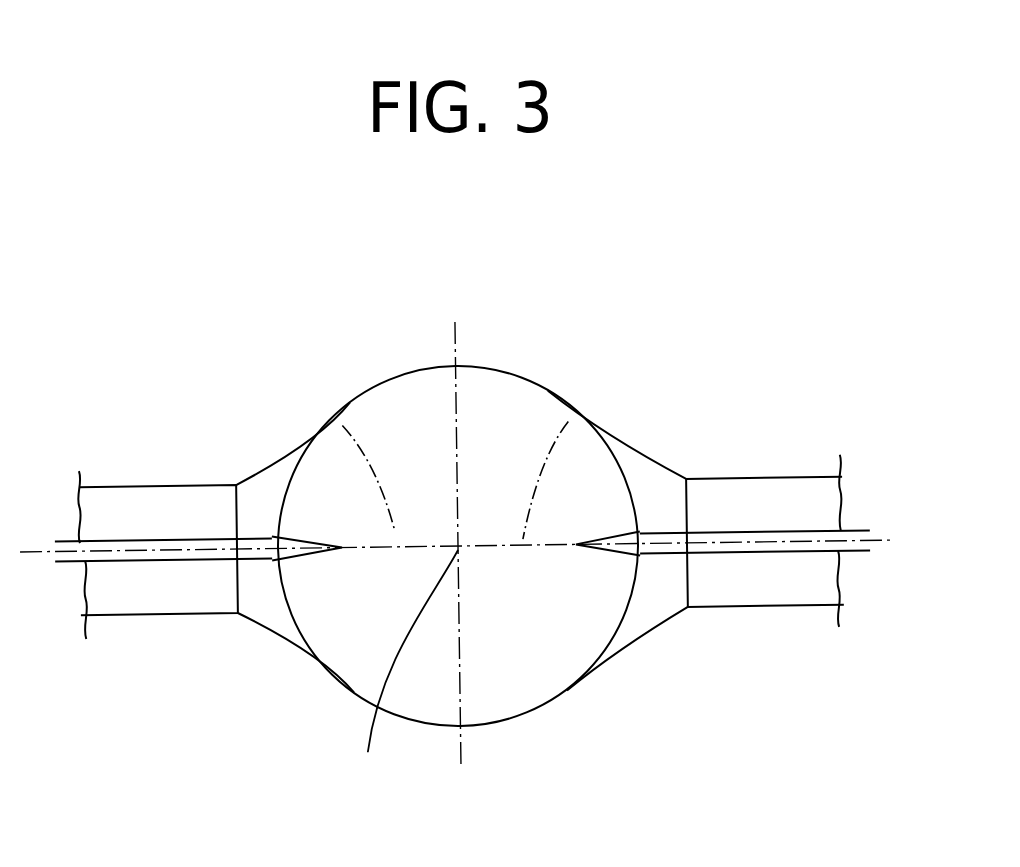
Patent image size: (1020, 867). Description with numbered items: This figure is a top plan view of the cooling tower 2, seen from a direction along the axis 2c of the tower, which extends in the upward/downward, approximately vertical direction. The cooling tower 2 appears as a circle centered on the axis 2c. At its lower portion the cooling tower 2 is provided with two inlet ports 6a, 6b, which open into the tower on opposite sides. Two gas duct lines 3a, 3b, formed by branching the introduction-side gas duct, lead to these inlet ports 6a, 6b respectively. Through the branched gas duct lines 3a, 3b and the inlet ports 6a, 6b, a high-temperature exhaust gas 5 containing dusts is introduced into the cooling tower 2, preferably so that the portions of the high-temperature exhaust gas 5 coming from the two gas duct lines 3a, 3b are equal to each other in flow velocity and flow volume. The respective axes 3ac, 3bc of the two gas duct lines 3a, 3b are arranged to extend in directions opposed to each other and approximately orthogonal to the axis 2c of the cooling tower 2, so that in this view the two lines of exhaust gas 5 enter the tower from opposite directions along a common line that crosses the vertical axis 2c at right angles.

The cooling tower 2 is at (505, 368).
The axis 2c is at (404, 681).
The gas duct line 3a is at (165, 487).
The gas duct line 3b is at (764, 477).
The axis 3ac is at (335, 412).
The axis 3bc is at (580, 410).
The high-temperature exhaust gas 5 is at (155, 566).
The inlet port 6a is at (268, 620).
The inlet port 6b is at (645, 606).